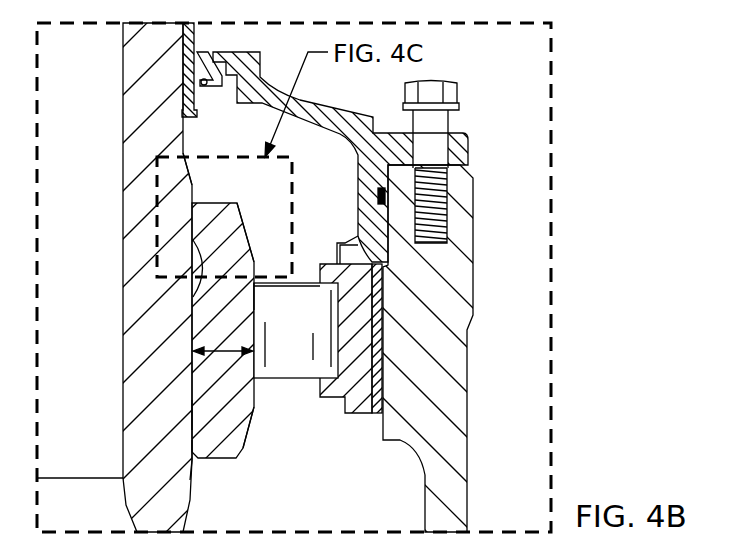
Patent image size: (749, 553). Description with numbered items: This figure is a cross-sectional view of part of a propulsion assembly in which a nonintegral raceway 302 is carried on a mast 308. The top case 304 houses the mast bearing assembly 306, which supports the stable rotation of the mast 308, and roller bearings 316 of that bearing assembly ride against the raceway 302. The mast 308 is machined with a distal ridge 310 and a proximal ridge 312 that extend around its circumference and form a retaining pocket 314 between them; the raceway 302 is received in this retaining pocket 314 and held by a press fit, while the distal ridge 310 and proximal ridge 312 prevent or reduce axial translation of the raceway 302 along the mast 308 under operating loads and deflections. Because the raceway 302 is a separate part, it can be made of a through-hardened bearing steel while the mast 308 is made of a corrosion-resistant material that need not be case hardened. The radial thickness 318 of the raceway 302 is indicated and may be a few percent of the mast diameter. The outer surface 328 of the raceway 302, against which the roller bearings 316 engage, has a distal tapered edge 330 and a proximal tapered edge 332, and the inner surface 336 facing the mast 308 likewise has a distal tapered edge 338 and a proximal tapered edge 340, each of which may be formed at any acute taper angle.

The nonintegral raceway 302 is at (203, 383).
The top case 304 is at (468, 446).
The mast bearing assembly 306 is at (360, 313).
The mast 308 is at (132, 108).
The distal ridge 310 is at (198, 192).
The proximal ridge 312 is at (193, 466).
The retaining pocket 314 is at (195, 297).
The roller bearings 316 is at (290, 370).
The radial thickness 318 is at (217, 348).
The outer surface 328 is at (257, 297).
The distal tapered edge 330 is at (248, 224).
The proximal tapered edge 332 is at (243, 438).
The inner surface 336 is at (190, 416).
The distal tapered edge 338 is at (192, 205).
The proximal tapered edge 340 is at (190, 458).